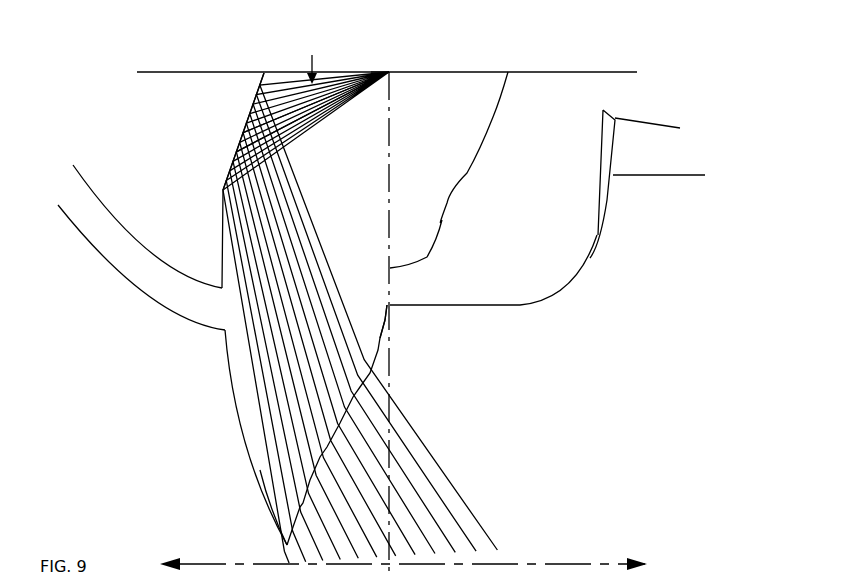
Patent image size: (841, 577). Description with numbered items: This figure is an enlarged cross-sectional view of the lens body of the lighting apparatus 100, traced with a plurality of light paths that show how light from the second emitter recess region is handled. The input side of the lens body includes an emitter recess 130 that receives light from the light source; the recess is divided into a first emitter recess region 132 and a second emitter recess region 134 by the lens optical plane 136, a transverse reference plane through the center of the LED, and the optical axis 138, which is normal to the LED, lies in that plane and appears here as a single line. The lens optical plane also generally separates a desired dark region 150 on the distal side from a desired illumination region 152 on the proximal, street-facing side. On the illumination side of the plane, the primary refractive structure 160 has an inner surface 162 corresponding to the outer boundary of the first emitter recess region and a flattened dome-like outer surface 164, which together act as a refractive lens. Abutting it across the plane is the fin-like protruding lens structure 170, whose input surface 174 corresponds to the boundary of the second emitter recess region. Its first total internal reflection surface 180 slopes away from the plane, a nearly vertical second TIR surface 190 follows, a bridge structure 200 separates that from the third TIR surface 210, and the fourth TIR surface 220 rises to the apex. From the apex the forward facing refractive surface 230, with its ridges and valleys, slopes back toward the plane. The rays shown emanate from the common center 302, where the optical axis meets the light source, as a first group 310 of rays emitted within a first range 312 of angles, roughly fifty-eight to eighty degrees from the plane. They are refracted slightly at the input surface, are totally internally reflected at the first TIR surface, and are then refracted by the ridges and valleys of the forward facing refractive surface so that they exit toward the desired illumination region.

The luminaire 100 is at (660, 64).
The emitter recess 130 is at (445, 104).
The first emitter recess region 132 is at (405, 88).
The second emitter recess region 134 is at (273, 73).
The lens optical plane 136 is at (393, 318).
The optical axis 138 is at (392, 340).
The desired dark region 150 is at (237, 563).
The desired illumination region 152 is at (547, 563).
The primary refractive structure 160 is at (535, 320).
The inner surface 162 is at (502, 90).
The outer surface 164 is at (482, 306).
The protruding lens structure 170 is at (204, 456).
The input surface 174 is at (366, 167).
The first total internal reflection surface 180 is at (246, 143).
The second TIR surface 190 is at (222, 240).
The bridge structure 200 is at (144, 285).
The third TIR surface 210 is at (237, 384).
The fourth TIR surface 220 is at (267, 493).
The forward facing refractive surface 230 is at (378, 362).
The common center 302 is at (388, 72).
The first group of light rays 310 is at (374, 100).
The first range of angles 312 is at (325, 116).